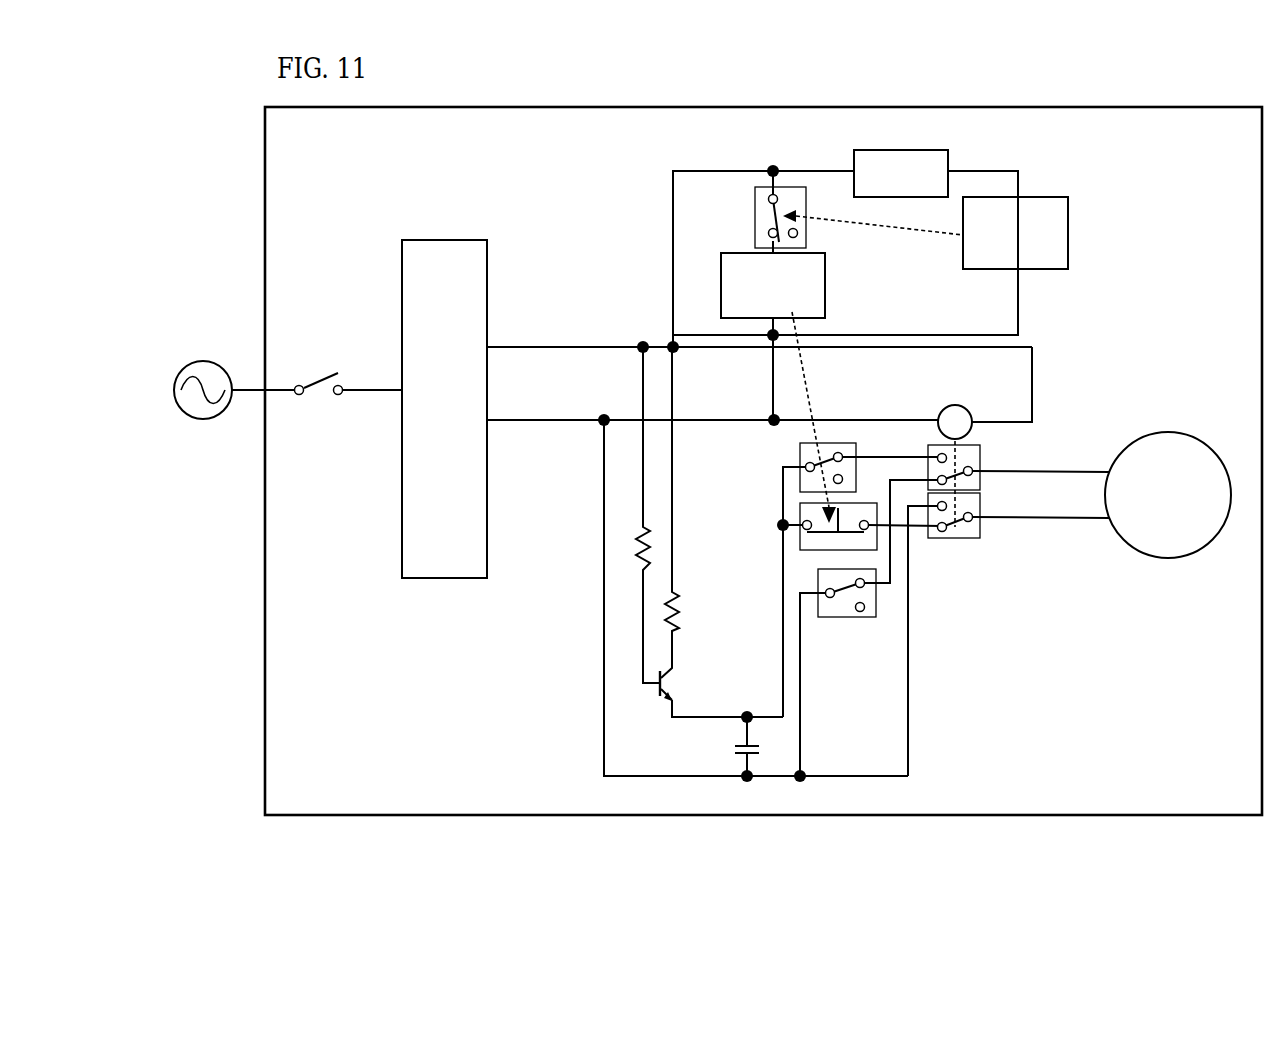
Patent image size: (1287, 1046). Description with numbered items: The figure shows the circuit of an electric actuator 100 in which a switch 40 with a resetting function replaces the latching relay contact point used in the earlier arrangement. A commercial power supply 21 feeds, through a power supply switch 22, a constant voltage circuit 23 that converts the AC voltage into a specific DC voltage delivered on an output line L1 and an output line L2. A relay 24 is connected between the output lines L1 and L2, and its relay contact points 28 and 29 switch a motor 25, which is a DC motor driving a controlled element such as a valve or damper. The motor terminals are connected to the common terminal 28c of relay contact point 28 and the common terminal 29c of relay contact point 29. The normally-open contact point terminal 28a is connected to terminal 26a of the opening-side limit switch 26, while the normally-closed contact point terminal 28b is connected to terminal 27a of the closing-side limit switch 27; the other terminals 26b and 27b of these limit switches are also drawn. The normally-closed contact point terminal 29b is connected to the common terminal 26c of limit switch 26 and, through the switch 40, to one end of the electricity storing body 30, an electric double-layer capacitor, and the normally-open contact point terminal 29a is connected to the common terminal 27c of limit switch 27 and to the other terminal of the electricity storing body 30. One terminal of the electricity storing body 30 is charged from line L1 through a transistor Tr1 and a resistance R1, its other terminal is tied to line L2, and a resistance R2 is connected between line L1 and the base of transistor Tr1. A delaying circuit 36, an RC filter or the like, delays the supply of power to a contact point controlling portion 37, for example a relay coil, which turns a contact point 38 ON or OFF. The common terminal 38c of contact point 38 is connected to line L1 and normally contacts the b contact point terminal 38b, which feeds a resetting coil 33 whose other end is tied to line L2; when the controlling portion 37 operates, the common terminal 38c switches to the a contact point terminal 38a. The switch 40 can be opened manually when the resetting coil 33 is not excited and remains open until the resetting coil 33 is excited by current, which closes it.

The electric actuator 100 is at (265, 190).
The commercial power supply 21 is at (212, 362).
The power supply switch 22 is at (318, 402).
The constant voltage circuit 23 is at (487, 249).
The relay 24 is at (968, 408).
The motor 25 is at (1192, 440).
The opening-side limit switch 26 is at (831, 571).
The terminal of the opening-side limit switch 26a is at (841, 456).
The terminal of the opening-side limit switch 26b is at (834, 480).
The common terminal of the opening-side limit switch 26c is at (804, 466).
The closing-side limit switch 27 is at (846, 664).
The terminal of the closing-side limit switch 27a is at (866, 585).
The terminal of the closing-side limit switch 27b is at (865, 612).
The common terminal of the closing-side limit switch 27c is at (822, 592).
The relay contact point 28 is at (986, 503).
The normally-open contact point terminal 28a is at (940, 456).
The normally-closed contact point terminal 28b is at (940, 479).
The common terminal 28c is at (972, 474).
The relay contact point 29 is at (1008, 634).
The normally-open contact point terminal 29a is at (948, 505).
The normally-closed contact point terminal 29b is at (942, 532).
The common terminal 29c is at (972, 521).
The electricity storing body 30 is at (735, 750).
The resetting coil 33 is at (828, 301).
The delaying circuit 36 is at (912, 196).
The contact point controlling portion 37 is at (1070, 221).
The contact point 38 is at (827, 213).
The a contact point terminal 38a is at (800, 233).
The b contact point terminal 38b is at (766, 233).
The common terminal 38c is at (782, 201).
The switch with a resetting function 40 is at (800, 540).
The output line L1 is at (522, 346).
The output line L2 is at (522, 419).
The resistance R1 is at (688, 512).
The resistance R2 is at (636, 515).
The transistor Tr1 is at (721, 697).